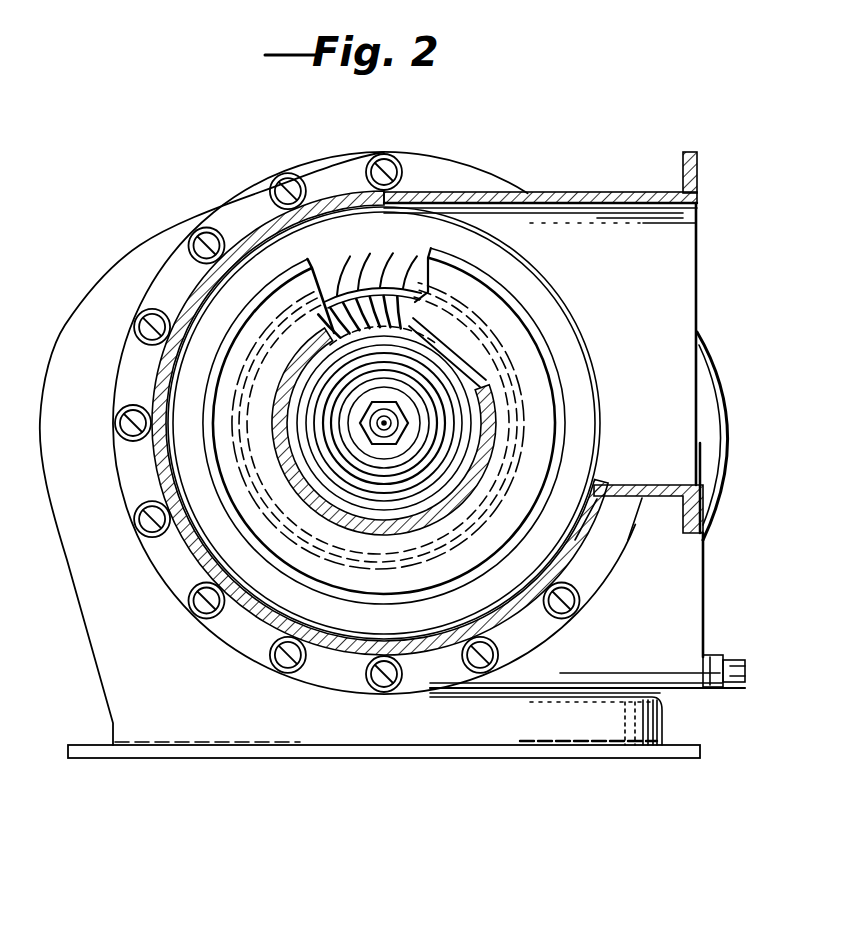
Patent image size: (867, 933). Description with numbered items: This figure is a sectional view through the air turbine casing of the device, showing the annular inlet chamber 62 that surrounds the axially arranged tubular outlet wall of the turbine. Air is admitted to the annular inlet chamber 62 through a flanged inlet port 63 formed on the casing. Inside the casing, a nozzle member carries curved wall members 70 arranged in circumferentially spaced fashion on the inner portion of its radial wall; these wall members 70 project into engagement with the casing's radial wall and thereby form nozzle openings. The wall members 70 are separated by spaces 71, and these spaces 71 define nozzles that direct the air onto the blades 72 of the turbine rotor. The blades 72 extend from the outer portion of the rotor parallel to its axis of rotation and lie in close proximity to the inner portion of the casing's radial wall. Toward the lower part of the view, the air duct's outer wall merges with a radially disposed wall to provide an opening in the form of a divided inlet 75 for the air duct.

The annular inlet chamber 62 is at (373, 262).
The flanged inlet port 63 is at (660, 303).
The curved wall members 70 is at (343, 263).
The spaces 71 is at (327, 267).
The blades 72 is at (420, 297).
The divided inlet 75 is at (357, 723).